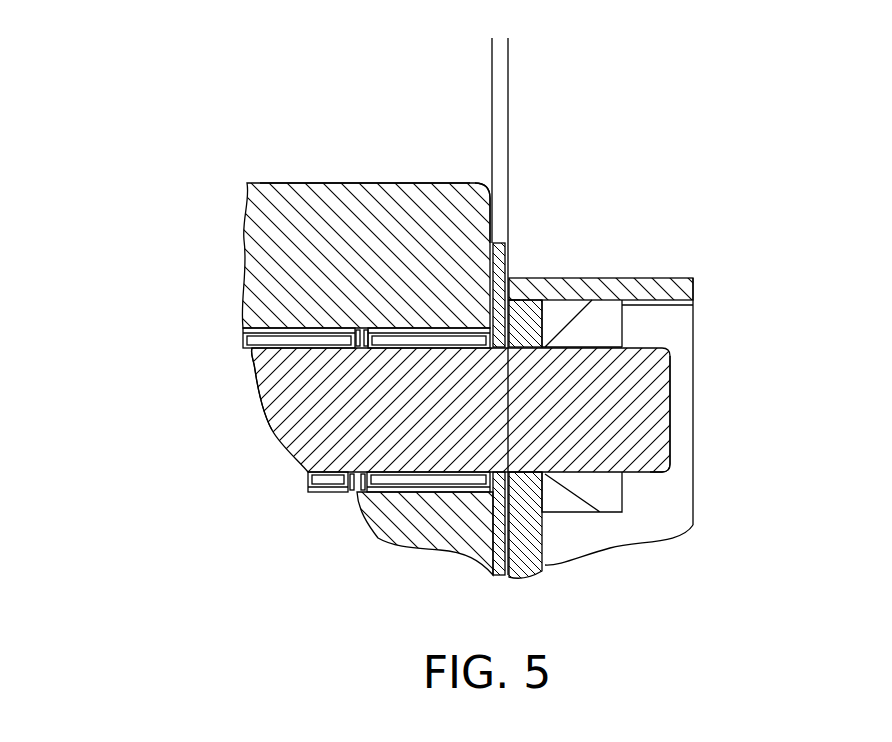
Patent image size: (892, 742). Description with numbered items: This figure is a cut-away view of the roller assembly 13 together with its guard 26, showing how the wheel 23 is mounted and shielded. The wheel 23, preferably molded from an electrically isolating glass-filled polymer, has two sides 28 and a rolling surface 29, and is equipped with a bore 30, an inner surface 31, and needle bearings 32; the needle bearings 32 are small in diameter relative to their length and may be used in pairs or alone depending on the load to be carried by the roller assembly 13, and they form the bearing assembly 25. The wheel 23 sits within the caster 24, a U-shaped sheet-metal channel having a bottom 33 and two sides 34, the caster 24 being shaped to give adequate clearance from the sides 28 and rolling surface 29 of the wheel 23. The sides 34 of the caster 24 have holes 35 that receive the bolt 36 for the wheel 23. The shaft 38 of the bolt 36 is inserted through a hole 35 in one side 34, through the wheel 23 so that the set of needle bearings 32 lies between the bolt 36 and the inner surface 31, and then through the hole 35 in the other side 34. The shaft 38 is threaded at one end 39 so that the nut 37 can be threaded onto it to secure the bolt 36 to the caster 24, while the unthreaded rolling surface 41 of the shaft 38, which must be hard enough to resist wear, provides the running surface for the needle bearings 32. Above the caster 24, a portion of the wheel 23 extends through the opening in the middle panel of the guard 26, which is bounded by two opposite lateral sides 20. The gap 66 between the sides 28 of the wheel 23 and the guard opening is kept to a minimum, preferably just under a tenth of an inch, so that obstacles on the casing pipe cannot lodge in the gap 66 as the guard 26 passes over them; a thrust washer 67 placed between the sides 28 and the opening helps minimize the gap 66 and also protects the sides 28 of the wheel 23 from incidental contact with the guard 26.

The roller assembly 13 is at (195, 232).
The lateral sides 20 is at (512, 282).
The wheel 23 is at (455, 222).
The caster 24 is at (567, 320).
The bearing assembly 25 is at (338, 478).
The guard 26 is at (597, 278).
The sides 28 is at (493, 258).
The rolling surface 29 is at (305, 183).
The bore 30 is at (243, 332).
The inner surface 31 is at (355, 332).
The needle bearings 32 is at (244, 340).
The bottom 33 is at (522, 298).
The sides 34 is at (546, 562).
The holes 35 is at (545, 474).
The bolt 36 is at (672, 382).
The nut 37 is at (620, 325).
The shaft 38 is at (668, 464).
The threaded end 39 is at (672, 425).
The unthreaded rolling surface 41 is at (258, 396).
The gap 66 is at (455, 57).
The thrust washer 67 is at (493, 225).